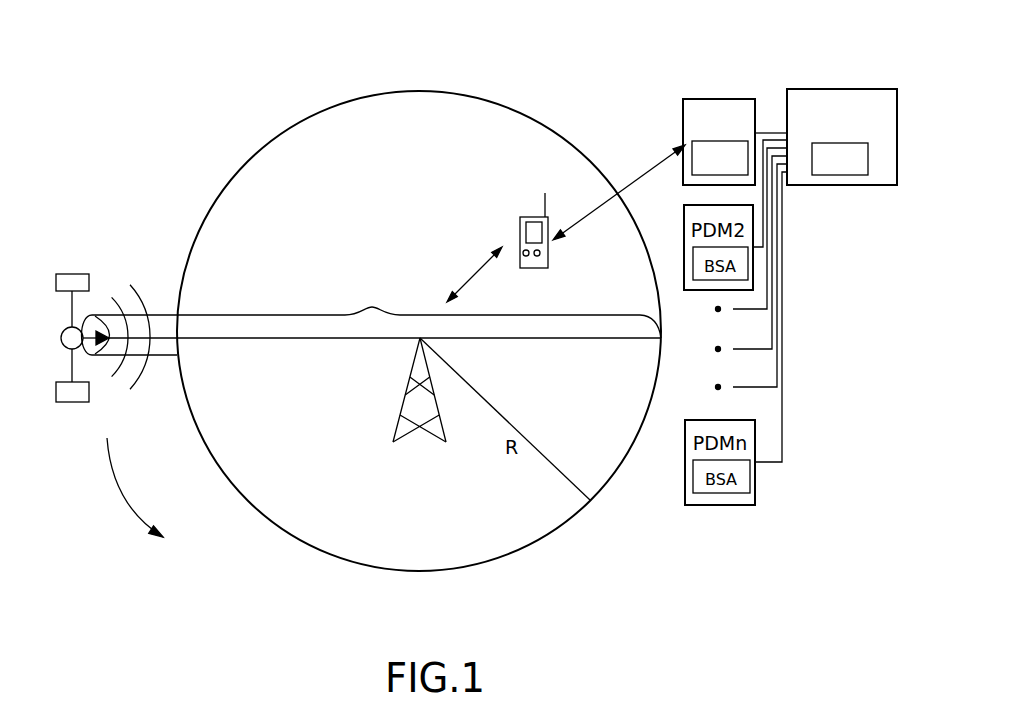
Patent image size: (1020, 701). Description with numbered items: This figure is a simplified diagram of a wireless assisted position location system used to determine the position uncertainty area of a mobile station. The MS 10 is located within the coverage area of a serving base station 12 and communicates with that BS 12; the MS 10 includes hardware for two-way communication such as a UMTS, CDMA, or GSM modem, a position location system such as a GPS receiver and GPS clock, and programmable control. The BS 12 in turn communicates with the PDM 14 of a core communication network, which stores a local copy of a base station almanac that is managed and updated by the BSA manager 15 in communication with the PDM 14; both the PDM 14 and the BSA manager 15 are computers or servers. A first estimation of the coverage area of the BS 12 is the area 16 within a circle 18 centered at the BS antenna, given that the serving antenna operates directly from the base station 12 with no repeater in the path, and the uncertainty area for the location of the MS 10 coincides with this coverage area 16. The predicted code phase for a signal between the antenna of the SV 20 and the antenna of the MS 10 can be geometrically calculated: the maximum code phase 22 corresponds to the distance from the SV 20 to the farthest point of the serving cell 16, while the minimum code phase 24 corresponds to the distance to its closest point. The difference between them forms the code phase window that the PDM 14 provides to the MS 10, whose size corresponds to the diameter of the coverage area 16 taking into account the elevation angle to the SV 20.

The mobile station 10 is at (550, 256).
The serving base station 12 is at (412, 368).
The PDM 14 is at (713, 99).
The BSA manager 15 is at (822, 89).
The coverage area 16 is at (326, 419).
The circle 18 is at (510, 108).
The satellite vehicle 20 is at (73, 274).
The maximum code phase 22 is at (372, 318).
The minimum code phase 24 is at (133, 355).